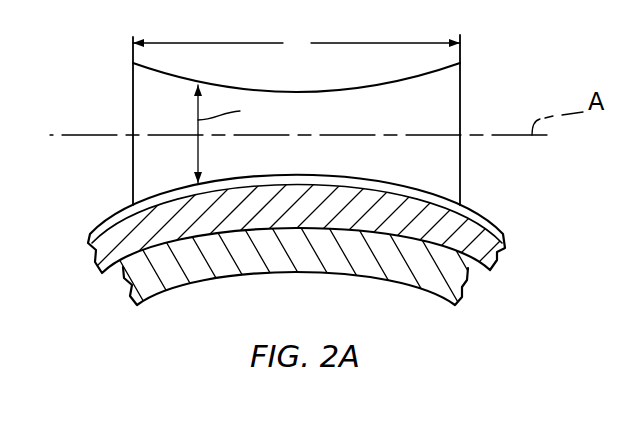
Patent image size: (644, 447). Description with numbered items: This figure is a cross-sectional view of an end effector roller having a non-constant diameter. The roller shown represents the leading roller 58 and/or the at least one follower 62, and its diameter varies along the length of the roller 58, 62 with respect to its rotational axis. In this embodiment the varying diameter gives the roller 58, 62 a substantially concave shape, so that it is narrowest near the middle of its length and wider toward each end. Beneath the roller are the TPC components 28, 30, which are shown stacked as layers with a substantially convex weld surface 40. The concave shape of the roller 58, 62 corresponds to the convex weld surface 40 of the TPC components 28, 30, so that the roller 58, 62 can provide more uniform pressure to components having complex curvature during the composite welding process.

The leading roller 58 is at (374, 117).
The follower 62 is at (481, 89).
The TPC component 28 is at (337, 258).
The TPC component 30 is at (419, 299).
The weld surface 40 is at (116, 232).